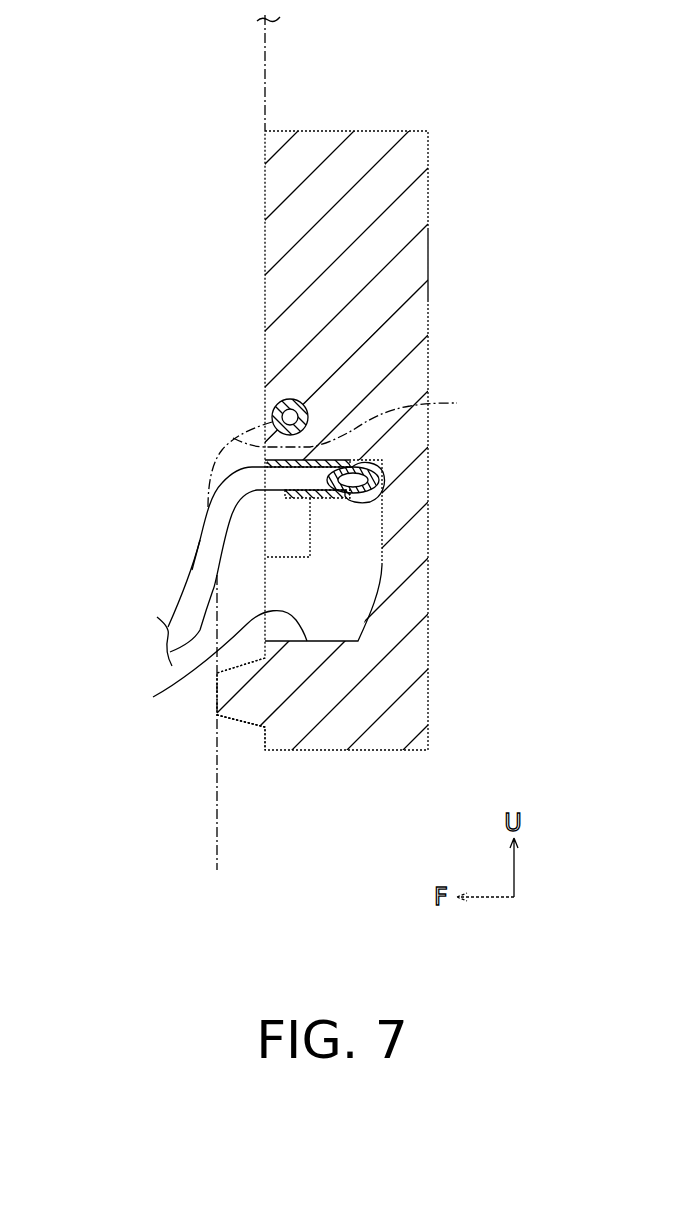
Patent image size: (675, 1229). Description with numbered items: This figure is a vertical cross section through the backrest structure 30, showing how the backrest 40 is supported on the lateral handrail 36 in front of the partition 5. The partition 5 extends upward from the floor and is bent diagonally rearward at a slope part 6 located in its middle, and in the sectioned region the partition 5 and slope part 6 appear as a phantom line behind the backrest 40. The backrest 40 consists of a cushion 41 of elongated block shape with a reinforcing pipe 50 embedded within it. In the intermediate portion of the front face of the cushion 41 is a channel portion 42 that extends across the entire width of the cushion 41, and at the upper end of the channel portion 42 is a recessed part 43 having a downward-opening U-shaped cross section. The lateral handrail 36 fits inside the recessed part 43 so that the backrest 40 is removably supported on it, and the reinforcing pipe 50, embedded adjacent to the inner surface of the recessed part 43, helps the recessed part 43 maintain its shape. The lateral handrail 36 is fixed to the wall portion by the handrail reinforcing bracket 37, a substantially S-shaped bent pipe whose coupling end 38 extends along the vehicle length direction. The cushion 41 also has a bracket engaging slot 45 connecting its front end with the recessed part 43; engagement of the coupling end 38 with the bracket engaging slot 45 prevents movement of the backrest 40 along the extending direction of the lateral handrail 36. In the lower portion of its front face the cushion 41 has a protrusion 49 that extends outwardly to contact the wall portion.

The partition 5 is at (265, 62).
The slope part 6 is at (344, 448).
The backrest structure 30 is at (392, 127).
The lateral handrail 36 is at (383, 497).
The handrail reinforcing bracket 37 is at (187, 570).
The coupling end 38 is at (302, 498).
The backrest 40 is at (428, 197).
The cushion 41 is at (428, 262).
The channel portion 42 is at (213, 669).
The recessed part 43 is at (363, 548).
The bracket engaging slot 45 is at (303, 532).
The protrusion 49 is at (237, 720).
The reinforcing pipe 50 is at (277, 400).